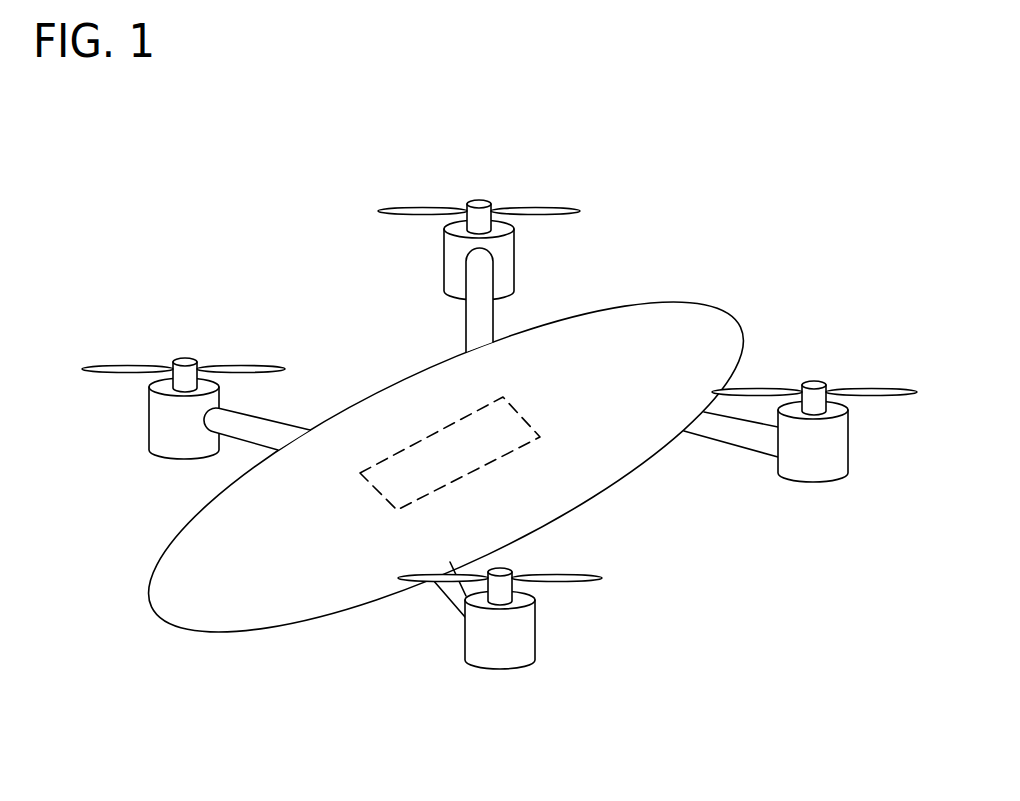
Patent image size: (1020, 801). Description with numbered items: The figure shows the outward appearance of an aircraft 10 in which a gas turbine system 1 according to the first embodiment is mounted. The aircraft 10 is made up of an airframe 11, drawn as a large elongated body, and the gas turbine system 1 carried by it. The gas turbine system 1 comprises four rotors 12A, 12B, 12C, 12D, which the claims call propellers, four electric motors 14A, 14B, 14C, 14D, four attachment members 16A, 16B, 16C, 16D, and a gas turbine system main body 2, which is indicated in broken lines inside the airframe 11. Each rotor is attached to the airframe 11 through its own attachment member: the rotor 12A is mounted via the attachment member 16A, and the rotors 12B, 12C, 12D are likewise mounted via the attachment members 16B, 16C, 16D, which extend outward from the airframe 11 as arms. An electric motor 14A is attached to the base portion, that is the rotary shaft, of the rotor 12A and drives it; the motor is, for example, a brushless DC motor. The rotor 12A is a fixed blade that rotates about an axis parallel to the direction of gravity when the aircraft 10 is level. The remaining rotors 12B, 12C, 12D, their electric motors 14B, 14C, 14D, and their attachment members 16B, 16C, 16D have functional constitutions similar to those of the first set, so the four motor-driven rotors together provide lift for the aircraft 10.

The gas turbine system 1 is at (588, 366).
The aircraft 10 is at (760, 213).
The airframe 11 is at (195, 619).
The gas turbine system main body 2 is at (490, 467).
The rotor 12A is at (238, 365).
The rotor 12B is at (533, 208).
The rotor 12C is at (563, 583).
The rotor 12D is at (880, 398).
The electric motor 14A is at (149, 417).
The electric motor 14B is at (443, 258).
The electric motor 14C is at (498, 670).
The electric motor 14D is at (813, 484).
The attachment member 16A is at (287, 425).
The attachment member 16B is at (466, 318).
The attachment member 16C is at (450, 603).
The attachment member 16D is at (733, 443).